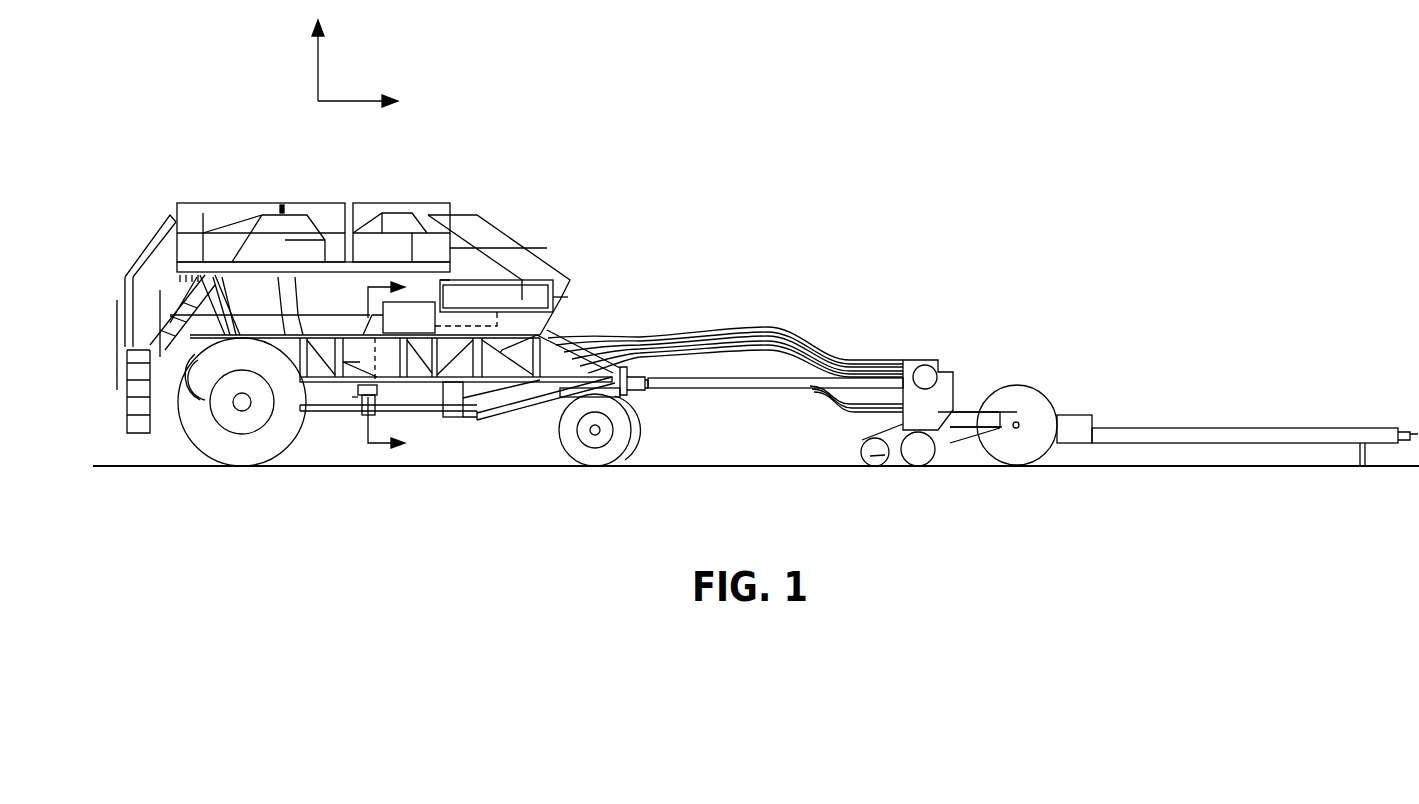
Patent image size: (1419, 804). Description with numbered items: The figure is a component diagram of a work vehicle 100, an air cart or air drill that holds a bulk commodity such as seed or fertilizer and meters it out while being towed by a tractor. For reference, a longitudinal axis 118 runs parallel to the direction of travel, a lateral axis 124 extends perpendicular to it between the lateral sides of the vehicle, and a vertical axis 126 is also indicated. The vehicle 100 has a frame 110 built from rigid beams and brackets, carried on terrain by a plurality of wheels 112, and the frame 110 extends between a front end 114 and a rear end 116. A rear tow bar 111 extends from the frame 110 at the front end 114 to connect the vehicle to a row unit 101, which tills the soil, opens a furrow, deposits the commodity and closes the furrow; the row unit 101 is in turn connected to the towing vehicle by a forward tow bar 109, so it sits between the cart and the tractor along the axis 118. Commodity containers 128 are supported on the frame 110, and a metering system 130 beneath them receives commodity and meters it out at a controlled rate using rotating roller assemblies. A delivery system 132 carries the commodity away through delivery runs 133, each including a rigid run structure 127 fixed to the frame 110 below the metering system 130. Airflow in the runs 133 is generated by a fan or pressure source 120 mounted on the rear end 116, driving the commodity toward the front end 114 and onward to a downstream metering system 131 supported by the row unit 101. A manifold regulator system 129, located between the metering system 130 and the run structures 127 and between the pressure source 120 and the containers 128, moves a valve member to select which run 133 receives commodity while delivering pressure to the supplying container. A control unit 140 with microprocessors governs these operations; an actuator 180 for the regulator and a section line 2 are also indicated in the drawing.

The work vehicle 100 is at (220, 170).
The row unit 101 is at (1055, 370).
The forward tow bar 109 is at (1177, 428).
The frame 110 is at (558, 327).
The rear tow bar 111 is at (750, 388).
The wheels 112 is at (215, 447).
The front end 114 is at (636, 373).
The rear end 116 is at (122, 303).
The longitudinal axis 118 is at (357, 104).
The fan or pressure source 120 is at (165, 228).
The lateral axis 124 is at (330, 86).
The vertical axis 126 is at (322, 60).
The run structure 127 is at (337, 426).
The commodity container 128 is at (271, 250).
The manifold regulator system 129 is at (412, 405).
The metering system 130 is at (338, 380).
The downstream metering system 131 is at (917, 362).
The delivery system 132 is at (500, 428).
The delivery run 133 is at (541, 412).
The control unit 140 is at (568, 297).
The actuator 180 is at (410, 334).
The section line for FIG. 2 is at (394, 366).